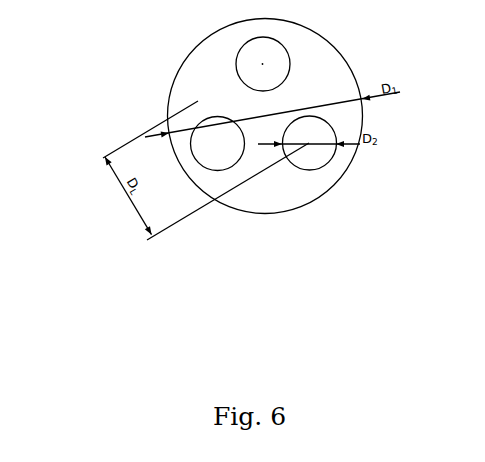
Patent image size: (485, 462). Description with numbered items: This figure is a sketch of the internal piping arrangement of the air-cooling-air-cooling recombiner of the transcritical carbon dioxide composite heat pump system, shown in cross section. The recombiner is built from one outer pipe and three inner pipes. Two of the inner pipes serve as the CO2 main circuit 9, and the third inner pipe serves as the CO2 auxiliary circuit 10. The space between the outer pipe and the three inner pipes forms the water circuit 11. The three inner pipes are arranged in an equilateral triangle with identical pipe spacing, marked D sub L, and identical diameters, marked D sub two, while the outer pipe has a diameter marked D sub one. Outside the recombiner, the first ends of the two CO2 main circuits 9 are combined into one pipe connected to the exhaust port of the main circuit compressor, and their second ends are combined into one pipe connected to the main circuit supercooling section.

The CO2 main circuit 9 is at (218, 153).
The CO2 auxiliary circuit 10 is at (276, 61).
The water circuit 11 is at (262, 64).